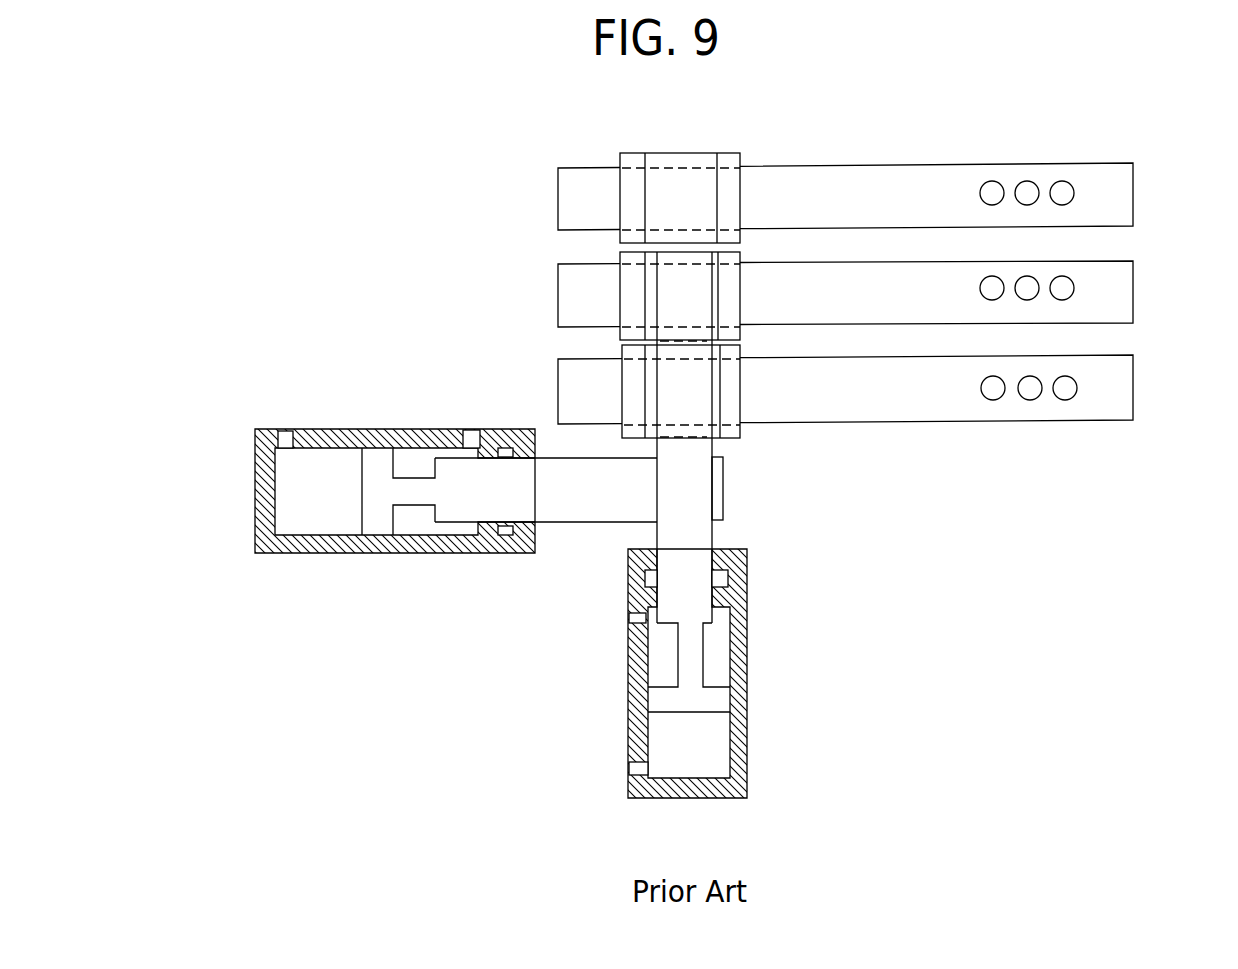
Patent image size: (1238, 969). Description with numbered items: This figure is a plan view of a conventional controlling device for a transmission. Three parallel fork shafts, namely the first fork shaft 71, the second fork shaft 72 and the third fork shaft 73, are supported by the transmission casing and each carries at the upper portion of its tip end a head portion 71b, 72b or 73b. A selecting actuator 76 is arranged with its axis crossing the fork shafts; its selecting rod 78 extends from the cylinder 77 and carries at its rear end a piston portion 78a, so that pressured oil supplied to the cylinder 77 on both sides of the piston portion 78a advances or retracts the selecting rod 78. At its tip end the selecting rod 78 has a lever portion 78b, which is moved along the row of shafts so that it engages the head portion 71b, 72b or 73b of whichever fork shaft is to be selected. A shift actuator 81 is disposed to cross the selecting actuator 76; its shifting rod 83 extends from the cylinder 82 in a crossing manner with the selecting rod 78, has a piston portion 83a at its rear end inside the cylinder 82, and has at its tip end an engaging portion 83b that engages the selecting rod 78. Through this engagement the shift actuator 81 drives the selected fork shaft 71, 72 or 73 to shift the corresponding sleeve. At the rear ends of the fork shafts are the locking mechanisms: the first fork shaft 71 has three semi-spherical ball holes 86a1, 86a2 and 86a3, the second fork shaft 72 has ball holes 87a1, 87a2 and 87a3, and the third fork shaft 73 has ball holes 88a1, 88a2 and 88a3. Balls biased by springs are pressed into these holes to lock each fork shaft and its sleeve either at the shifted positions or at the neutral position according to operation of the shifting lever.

The first fork shaft 71 is at (1137, 181).
The second fork shaft 72 is at (1138, 272).
The third fork shaft 73 is at (1138, 380).
The head portion 71b is at (739, 160).
The head portion 72b is at (621, 262).
The head portion 73b is at (738, 436).
The selecting actuator 76 is at (694, 673).
The cylinder 77 is at (742, 622).
The selecting rod 78 is at (658, 437).
The piston portion 78a is at (742, 703).
The lever portion 78b is at (657, 305).
The shift actuator 81 is at (395, 489).
The cylinder 82 is at (338, 432).
The shifting rod 83 is at (613, 527).
The piston portion 83a is at (372, 527).
The engaging portion 83b is at (725, 493).
The ball hole 86a1 is at (987, 183).
The ball hole 86a2 is at (1026, 182).
The ball hole 86a3 is at (1061, 182).
The ball hole 87a1 is at (988, 277).
The ball hole 87a2 is at (1027, 277).
The ball hole 87a3 is at (1063, 277).
The ball hole 88a1 is at (987, 399).
The ball hole 88a2 is at (1029, 399).
The ball hole 88a3 is at (1066, 397).